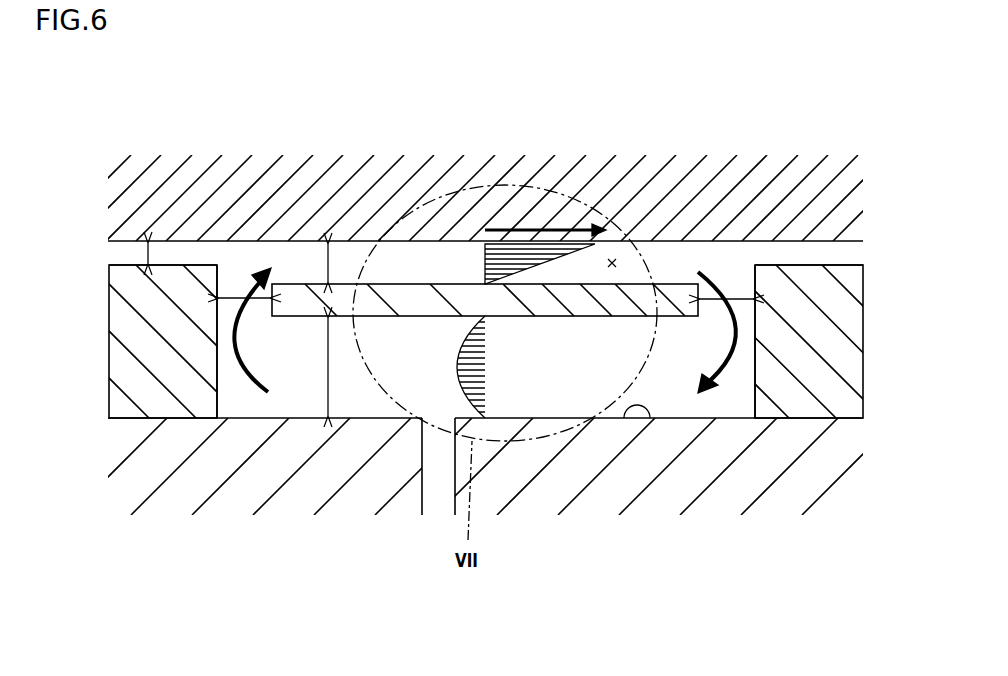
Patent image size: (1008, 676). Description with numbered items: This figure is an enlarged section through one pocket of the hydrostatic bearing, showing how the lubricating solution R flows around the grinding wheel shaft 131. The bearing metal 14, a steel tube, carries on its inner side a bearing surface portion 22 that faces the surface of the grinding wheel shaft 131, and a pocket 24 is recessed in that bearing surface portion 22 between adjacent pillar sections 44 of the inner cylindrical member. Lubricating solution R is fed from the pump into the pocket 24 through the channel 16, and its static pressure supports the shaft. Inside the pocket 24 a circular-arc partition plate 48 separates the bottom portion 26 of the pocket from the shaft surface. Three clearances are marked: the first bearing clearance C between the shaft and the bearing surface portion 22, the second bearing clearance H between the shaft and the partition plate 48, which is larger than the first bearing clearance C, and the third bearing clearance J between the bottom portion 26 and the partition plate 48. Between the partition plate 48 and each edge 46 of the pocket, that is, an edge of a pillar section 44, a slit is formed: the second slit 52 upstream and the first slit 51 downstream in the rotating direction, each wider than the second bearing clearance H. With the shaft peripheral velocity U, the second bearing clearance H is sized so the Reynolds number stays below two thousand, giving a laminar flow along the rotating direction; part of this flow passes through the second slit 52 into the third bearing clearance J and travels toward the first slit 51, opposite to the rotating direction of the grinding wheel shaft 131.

The grinding wheel shaft 131 is at (682, 188).
The pocket 24 is at (615, 250).
The bearing metal 14 is at (397, 487).
The channel 16 is at (442, 497).
The pillar section 44 is at (132, 377).
The edge of the pocket 46 is at (218, 264).
The bearing surface portion 22 is at (172, 265).
The partition plate 48 is at (535, 303).
The peripheral velocity U is at (558, 223).
The first bearing clearance C is at (148, 251).
The second bearing clearance H is at (326, 262).
The third bearing clearance J is at (327, 368).
The second slit 52 is at (230, 299).
The first slit 51 is at (720, 300).
The lubricating solution R is at (252, 380).
The bottom portion 26 is at (653, 420).